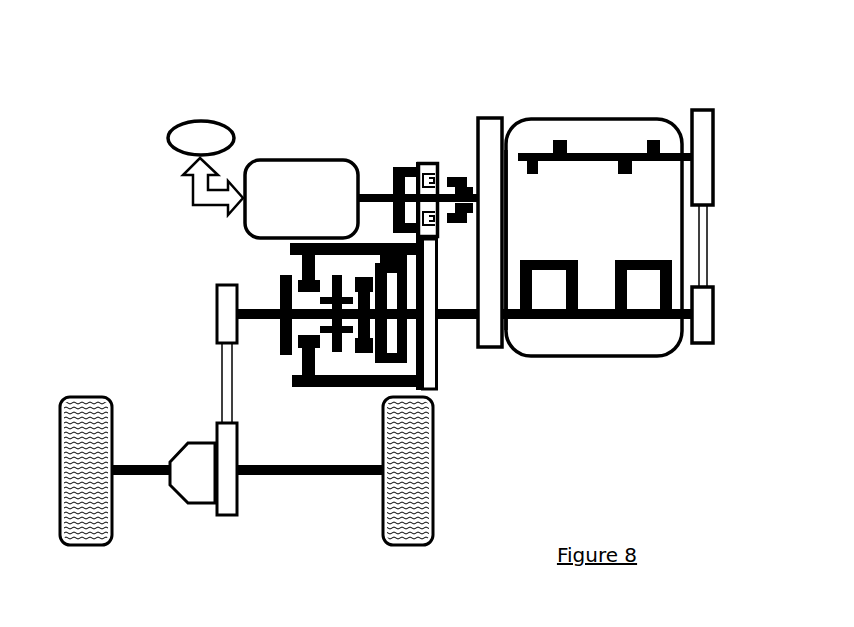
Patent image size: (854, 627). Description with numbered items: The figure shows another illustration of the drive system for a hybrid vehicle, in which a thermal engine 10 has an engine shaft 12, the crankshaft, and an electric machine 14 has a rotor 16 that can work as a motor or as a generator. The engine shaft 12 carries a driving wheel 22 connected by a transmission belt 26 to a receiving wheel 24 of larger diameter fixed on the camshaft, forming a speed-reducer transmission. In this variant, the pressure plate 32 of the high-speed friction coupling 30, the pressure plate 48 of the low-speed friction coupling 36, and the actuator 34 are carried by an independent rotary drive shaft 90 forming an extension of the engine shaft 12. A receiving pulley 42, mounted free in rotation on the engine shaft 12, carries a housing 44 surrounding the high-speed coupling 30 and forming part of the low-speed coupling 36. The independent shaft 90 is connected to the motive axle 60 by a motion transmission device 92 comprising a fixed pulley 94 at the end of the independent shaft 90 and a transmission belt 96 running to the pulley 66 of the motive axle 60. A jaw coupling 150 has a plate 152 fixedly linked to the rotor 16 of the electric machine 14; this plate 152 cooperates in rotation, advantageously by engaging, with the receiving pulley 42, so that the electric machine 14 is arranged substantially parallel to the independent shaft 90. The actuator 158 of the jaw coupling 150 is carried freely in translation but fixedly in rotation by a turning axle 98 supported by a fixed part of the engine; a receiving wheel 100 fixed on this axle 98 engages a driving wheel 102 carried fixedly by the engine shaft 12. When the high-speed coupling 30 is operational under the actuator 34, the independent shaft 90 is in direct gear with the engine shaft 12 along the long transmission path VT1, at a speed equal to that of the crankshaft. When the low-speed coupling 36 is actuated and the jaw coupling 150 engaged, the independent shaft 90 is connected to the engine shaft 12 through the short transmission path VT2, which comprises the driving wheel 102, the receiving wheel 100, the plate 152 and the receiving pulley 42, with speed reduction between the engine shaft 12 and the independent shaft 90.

The thermal engine 10 is at (606, 262).
The engine shaft 12 is at (596, 321).
The electric machine 14 is at (263, 179).
The rotor 16 is at (393, 188).
The driving wheel 22 is at (714, 328).
The receiving wheel 24 is at (700, 131).
The transmission belt 26 is at (710, 238).
The disengageable friction coupling 30 is at (347, 354).
The pressure plate 32 is at (377, 352).
The actuator 34 is at (324, 365).
The disengageable friction coupling 36 is at (282, 361).
The receiving pulley 42 is at (438, 390).
The housing 44 is at (407, 341).
The pressure plate 48 is at (286, 272).
The motive axle 60 is at (269, 503).
The pulley 66 is at (225, 498).
The independent rotary drive shaft 90 is at (253, 311).
The motion transmission device 92 is at (158, 440).
The fixed pulley 94 is at (230, 315).
The transmission belt 96 is at (225, 384).
The turning axle 98 is at (507, 237).
The receiving wheel 100 is at (490, 130).
The driving wheel 102 is at (510, 332).
The jaw coupling 150 is at (402, 222).
The plate 152 is at (420, 168).
The actuator 158 is at (461, 166).
The long transmission path VT1 is at (440, 362).
The short transmission path VT2 is at (460, 341).